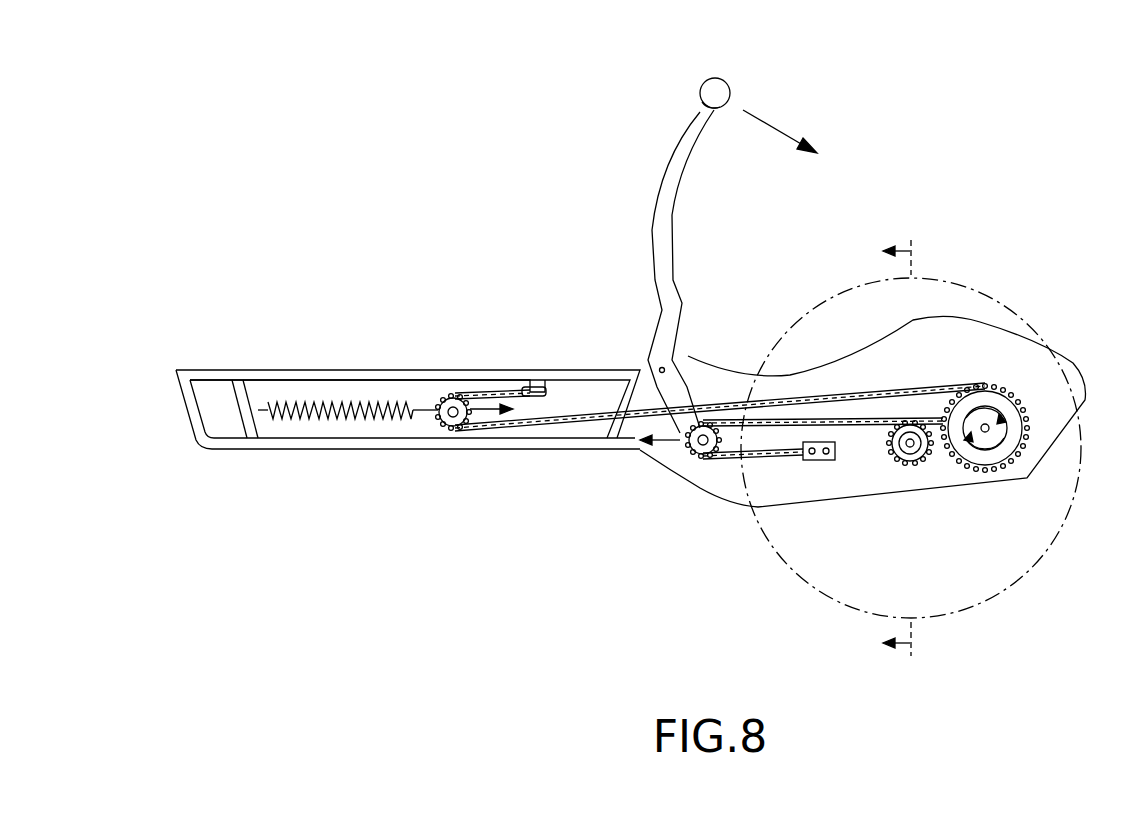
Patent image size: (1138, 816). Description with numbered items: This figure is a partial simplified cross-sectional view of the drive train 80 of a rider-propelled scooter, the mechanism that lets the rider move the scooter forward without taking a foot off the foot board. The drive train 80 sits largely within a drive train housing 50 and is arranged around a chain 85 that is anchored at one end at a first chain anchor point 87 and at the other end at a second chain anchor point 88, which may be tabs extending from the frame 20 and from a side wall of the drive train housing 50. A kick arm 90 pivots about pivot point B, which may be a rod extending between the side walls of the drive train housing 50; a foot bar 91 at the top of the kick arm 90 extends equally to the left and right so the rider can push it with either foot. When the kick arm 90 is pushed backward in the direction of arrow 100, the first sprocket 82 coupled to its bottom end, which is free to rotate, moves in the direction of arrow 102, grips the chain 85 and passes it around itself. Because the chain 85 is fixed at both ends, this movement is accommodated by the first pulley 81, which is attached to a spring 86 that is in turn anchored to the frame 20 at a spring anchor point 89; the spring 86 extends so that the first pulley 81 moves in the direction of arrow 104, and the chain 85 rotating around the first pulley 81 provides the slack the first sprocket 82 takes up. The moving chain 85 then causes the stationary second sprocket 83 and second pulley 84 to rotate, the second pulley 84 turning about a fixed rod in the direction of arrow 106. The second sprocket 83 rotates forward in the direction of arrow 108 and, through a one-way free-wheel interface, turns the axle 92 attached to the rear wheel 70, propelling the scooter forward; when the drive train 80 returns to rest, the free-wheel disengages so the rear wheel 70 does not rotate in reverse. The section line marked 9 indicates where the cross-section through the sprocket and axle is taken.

The drive train 80 is at (399, 195).
The frame 20 is at (312, 450).
The spring anchor point 89 is at (238, 432).
The spring 86 is at (340, 407).
The first pulley 81 is at (455, 430).
The chain 85 is at (573, 428).
The first chain anchor point 87 is at (545, 380).
The arrow 104 is at (483, 402).
The arrow 102 is at (660, 446).
The kick arm 90 is at (670, 175).
The pivot point B is at (650, 355).
The foot bar 91 is at (720, 88).
The arrow 100 is at (782, 125).
The rear wheel 70 is at (850, 292).
The section line 9- 9 is at (908, 447).
The drive train housing 50 is at (1035, 365).
The first sprocket 82 is at (703, 458).
The second sprocket 83 is at (897, 460).
The second chain anchor point 88 is at (815, 462).
The axle 92 is at (913, 425).
The arrow 108 is at (918, 460).
The second pulley 84 is at (1023, 433).
The arrow 106 is at (990, 465).